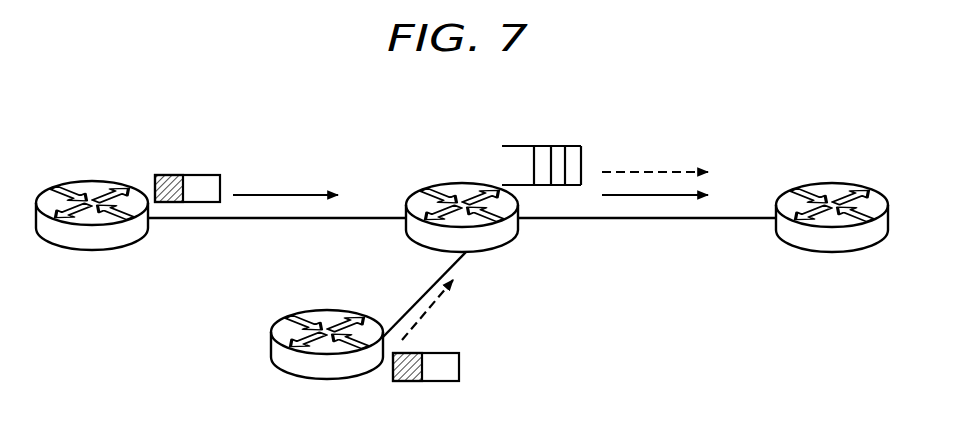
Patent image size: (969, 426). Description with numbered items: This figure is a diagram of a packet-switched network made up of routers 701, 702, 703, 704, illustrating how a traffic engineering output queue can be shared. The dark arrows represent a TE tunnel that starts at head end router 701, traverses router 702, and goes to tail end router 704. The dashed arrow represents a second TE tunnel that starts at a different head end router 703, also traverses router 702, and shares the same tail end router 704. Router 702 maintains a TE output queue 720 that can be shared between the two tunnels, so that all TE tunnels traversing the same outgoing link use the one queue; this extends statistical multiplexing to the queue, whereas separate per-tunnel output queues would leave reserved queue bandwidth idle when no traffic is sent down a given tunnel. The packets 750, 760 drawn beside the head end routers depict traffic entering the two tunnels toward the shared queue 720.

The router 701 is at (92, 180).
The router 702 is at (462, 183).
The router 703 is at (327, 310).
The tail end router 704 is at (830, 183).
The TE output queue 720 is at (560, 146).
The packet 750 is at (190, 175).
The packet 760 is at (460, 366).